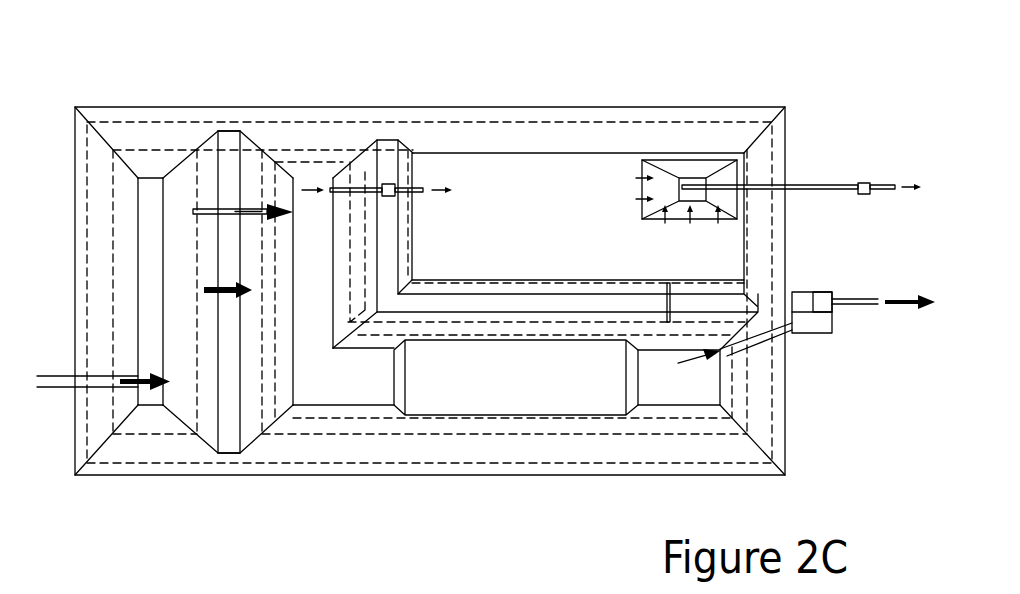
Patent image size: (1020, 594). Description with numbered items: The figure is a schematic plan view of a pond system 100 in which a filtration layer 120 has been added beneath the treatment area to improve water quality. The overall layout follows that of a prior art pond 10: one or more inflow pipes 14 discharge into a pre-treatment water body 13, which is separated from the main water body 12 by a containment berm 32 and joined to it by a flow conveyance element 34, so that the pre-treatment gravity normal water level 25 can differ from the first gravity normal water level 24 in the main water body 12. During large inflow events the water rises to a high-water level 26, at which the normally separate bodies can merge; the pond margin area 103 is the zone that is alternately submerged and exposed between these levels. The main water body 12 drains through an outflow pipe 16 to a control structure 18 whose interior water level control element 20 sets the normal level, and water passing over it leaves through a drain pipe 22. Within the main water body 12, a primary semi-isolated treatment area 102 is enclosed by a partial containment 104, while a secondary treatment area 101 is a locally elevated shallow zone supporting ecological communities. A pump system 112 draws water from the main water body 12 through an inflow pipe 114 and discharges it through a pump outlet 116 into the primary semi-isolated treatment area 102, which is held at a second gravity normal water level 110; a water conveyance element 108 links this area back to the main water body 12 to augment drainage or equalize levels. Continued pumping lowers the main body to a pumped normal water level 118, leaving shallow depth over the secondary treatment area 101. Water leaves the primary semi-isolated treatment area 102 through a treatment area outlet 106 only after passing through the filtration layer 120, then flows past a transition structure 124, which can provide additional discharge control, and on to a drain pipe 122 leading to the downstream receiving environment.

The pond 10 is at (75, 178).
The main water body 12 is at (324, 384).
The pre-treatment water body 13 is at (162, 310).
The inflow pipe 14 is at (58, 376).
The outflow pipe 16 is at (763, 346).
The control structure 18 is at (800, 292).
The water level control element 20 is at (813, 311).
The drain pipe 22 is at (867, 297).
The first gravity normal water level 24 is at (288, 150).
The pre-treatment gravity normal water level 25 is at (143, 148).
The high-water level 26 is at (478, 115).
The containment berm 32 is at (228, 160).
The flow conveyance element 34 is at (208, 209).
The pond system 100 is at (357, 57).
The secondary treatment area 101 is at (540, 384).
The primary semi-isolated treatment area 102 is at (583, 228).
The pond margin area 103 is at (618, 133).
The partial containment 104 is at (390, 148).
The treatment area outlet 106 is at (800, 184).
The water conveyance element 108 is at (663, 302).
The second gravity normal water level 110 is at (585, 148).
The pump system 112 is at (388, 197).
The inflow pipe 114 is at (357, 194).
The pump outlet 116 is at (418, 187).
The pumped normal water level 118 is at (325, 162).
The filtration layer 120 is at (665, 160).
The drain pipe 122 is at (888, 194).
The transition structure 124 is at (865, 183).